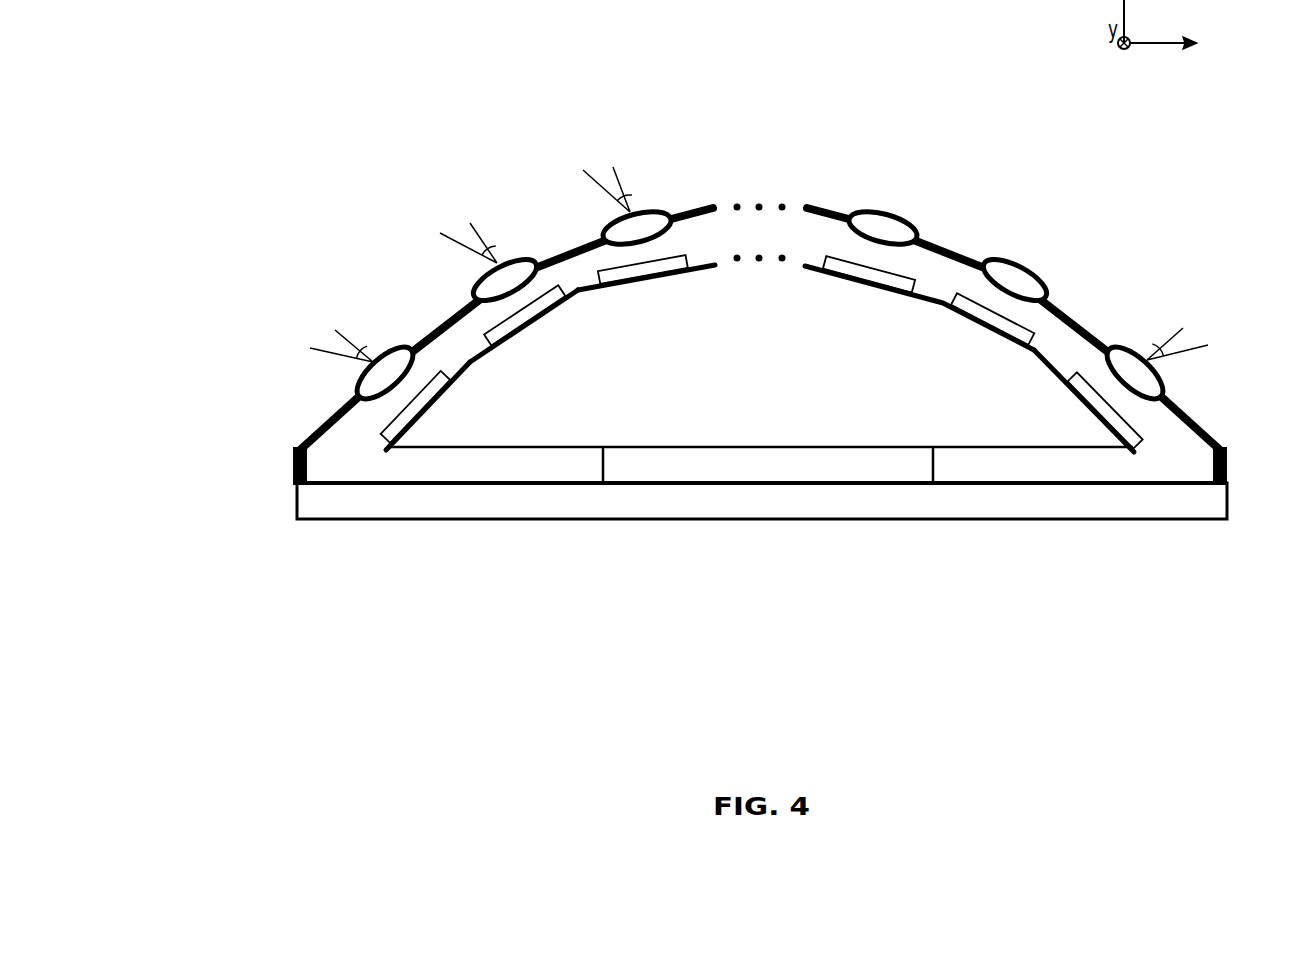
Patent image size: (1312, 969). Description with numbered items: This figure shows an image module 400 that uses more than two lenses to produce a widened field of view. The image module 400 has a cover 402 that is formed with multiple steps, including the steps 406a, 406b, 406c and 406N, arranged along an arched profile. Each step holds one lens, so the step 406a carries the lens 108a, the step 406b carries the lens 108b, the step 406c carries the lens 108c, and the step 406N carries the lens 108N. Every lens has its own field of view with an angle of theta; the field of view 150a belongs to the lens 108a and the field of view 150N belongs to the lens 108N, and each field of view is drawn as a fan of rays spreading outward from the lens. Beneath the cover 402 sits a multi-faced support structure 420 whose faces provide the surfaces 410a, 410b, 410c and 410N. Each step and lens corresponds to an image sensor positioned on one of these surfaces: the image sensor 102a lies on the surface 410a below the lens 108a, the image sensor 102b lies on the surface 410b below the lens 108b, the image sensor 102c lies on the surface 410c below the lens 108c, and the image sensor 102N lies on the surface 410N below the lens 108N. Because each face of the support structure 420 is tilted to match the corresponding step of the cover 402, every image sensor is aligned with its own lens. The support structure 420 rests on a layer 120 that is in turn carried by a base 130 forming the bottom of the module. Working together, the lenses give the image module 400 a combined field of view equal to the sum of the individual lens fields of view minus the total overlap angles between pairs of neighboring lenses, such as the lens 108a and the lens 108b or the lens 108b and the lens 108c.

The image module 400 is at (184, 87).
The cover 402 is at (288, 438).
The step 406a is at (349, 403).
The step 406b is at (474, 298).
The step 406c is at (594, 236).
The step 406N is at (1201, 421).
The lens 108a is at (398, 347).
The lens 108b is at (524, 256).
The lens 108c is at (660, 210).
The lens 108N is at (1122, 346).
The FOV 150a is at (373, 362).
The FOV 150N is at (1147, 360).
The surface 410a is at (471, 368).
The surface 410b is at (576, 293).
The surface 410c is at (708, 262).
The surface 410N is at (1070, 361).
The image sensor 102a is at (421, 404).
The image sensor 102b is at (531, 325).
The image sensor 102c is at (648, 282).
The image sensor 102N is at (1126, 438).
The base layer 120 is at (814, 457).
The multi-faced support structure 420 is at (1010, 437).
The base plate 130 is at (418, 497).